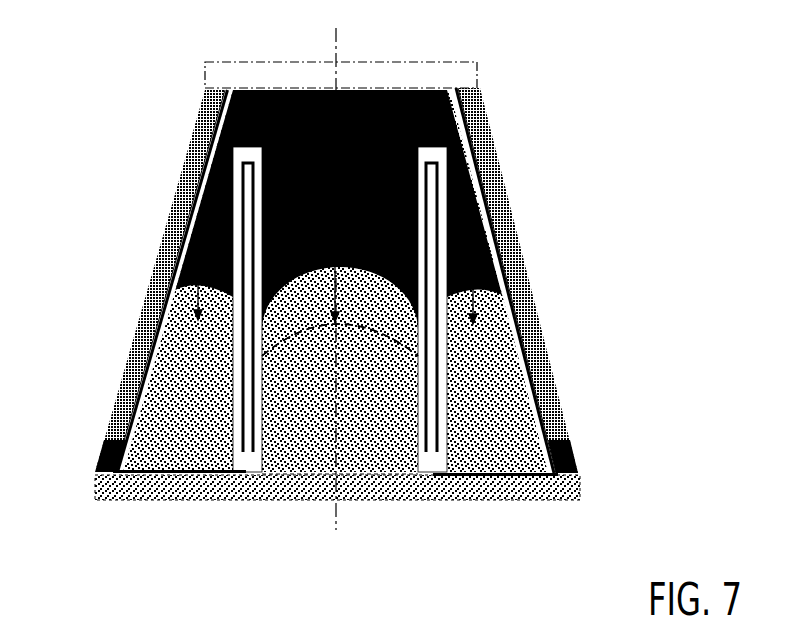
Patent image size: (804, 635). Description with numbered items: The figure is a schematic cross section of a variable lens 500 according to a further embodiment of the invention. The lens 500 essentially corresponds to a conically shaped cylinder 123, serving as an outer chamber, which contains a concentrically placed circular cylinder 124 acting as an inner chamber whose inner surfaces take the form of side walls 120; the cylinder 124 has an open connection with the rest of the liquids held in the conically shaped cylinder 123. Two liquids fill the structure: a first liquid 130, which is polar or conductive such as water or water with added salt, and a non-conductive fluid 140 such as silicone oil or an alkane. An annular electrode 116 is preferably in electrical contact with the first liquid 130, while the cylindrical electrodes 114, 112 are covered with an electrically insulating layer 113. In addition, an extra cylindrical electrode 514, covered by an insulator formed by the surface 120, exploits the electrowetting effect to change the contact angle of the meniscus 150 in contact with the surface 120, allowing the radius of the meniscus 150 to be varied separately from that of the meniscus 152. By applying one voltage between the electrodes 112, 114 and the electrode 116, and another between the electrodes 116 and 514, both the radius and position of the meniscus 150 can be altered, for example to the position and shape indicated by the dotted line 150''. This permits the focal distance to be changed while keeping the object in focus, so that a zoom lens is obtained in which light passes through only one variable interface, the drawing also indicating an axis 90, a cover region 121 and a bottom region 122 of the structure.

The optical axis 90 is at (340, 42).
The cylindrical electrode 112 is at (136, 330).
The electrically insulating layer 113 is at (493, 247).
The cylindrical electrode 114 is at (203, 183).
The annular electrode 116 is at (157, 478).
The side walls 120 is at (260, 235).
The cover plate 121 is at (400, 75).
The bottom 122 is at (350, 473).
The conically shaped cylinder 123 is at (197, 103).
The circular cylinder 124 is at (252, 467).
The first liquid 130 is at (517, 452).
The fluid 140 is at (261, 90).
The meniscus 150 is at (418, 270).
The dotted line 150'' is at (340, 464).
The meniscus 152 is at (192, 296).
The lens 500 is at (600, 478).
The cylindrical electrode 514 is at (256, 195).